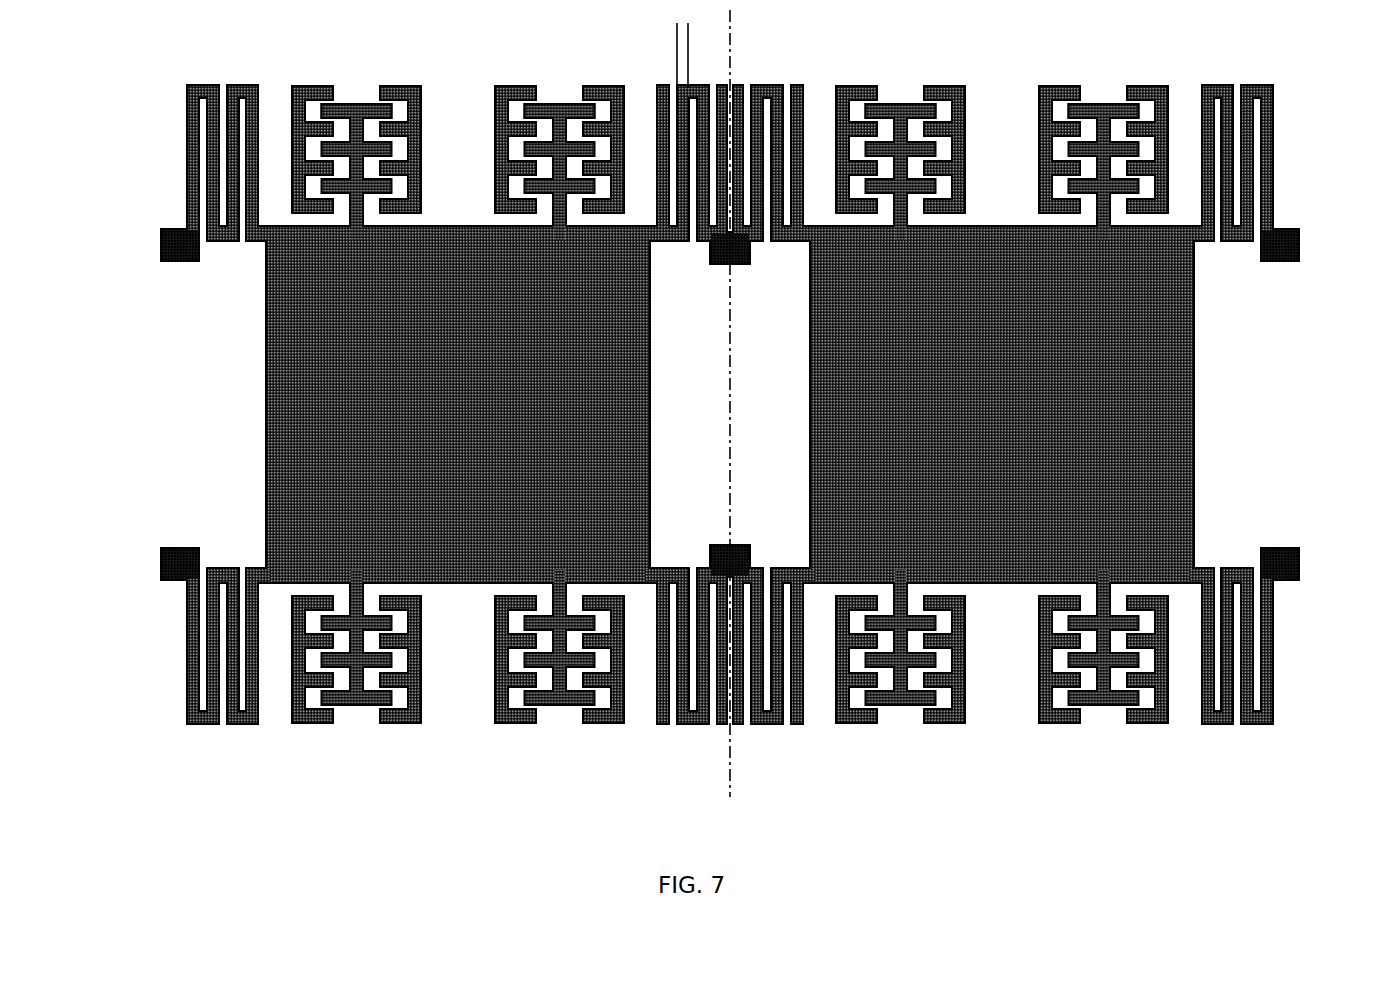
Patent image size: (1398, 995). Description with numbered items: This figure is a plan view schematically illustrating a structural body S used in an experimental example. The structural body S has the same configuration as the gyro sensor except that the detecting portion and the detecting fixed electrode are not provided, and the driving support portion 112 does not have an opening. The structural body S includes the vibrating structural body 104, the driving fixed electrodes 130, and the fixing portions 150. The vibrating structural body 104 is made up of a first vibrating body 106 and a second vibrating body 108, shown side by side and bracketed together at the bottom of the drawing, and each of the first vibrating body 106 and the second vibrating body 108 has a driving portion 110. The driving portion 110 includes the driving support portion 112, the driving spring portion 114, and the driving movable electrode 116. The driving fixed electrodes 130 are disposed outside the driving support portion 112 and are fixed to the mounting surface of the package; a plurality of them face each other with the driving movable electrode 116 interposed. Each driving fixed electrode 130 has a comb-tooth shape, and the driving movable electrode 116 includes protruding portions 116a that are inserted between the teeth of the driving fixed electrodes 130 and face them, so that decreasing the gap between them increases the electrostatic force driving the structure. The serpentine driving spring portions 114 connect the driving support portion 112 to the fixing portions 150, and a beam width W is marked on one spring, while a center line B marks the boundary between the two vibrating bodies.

The vibrating structural body 104 is at (1270, 810).
The first vibrating body 106 is at (722, 757).
The second vibrating body 108 is at (1270, 757).
The driving portion 110 is at (122, 512).
The driving support portion 112 is at (292, 533).
The driving spring portion 114 is at (213, 107).
The driving movable electrode 116 is at (356, 122).
The protruding portion 116a is at (383, 110).
The driving fixed electrode 130 is at (300, 100).
The fixing portion 150 is at (176, 247).
The spring beam width W is at (645, 35).
The structural body S is at (1270, 55).
The boundary line B is at (732, 782).